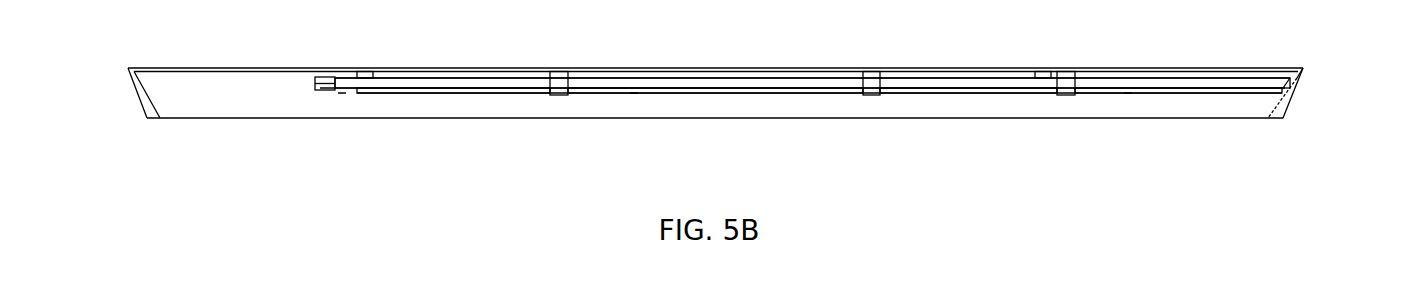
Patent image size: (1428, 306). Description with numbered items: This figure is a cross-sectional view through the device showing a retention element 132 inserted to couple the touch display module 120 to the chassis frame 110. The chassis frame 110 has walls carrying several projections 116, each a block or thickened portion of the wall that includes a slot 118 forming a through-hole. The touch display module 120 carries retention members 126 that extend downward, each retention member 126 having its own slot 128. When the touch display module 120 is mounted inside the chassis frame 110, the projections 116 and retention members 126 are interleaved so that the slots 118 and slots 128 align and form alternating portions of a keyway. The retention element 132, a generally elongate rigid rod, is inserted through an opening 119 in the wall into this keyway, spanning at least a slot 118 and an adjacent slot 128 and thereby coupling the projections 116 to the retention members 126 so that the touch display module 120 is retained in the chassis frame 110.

The chassis frame 110 is at (393, 122).
The projection 116 is at (342, 93).
The slot 118 is at (320, 78).
The opening 119 is at (1295, 80).
The touch display module 120 is at (735, 63).
The retention member 126 is at (437, 72).
The slot 128 is at (443, 74).
The retention element 132 is at (1297, 77).